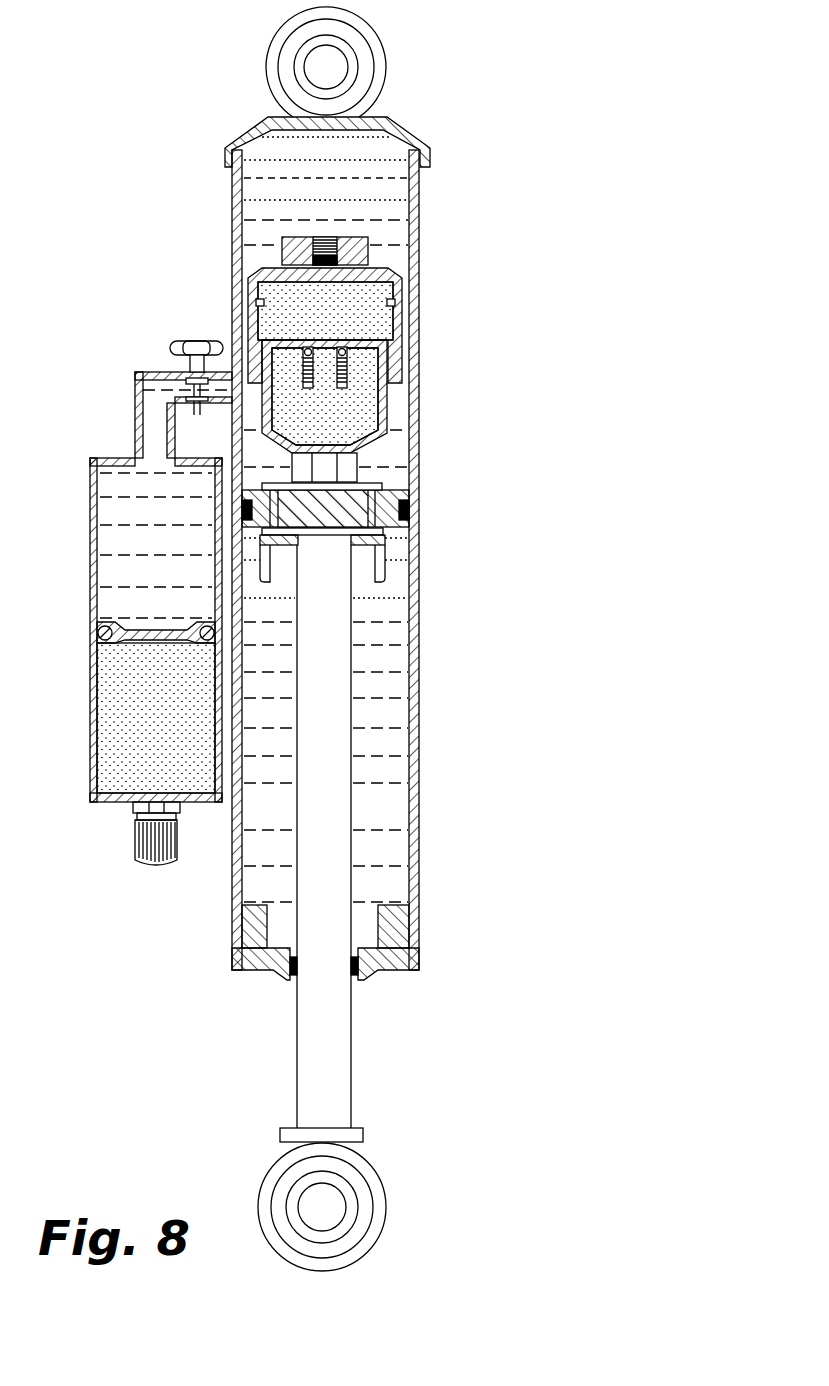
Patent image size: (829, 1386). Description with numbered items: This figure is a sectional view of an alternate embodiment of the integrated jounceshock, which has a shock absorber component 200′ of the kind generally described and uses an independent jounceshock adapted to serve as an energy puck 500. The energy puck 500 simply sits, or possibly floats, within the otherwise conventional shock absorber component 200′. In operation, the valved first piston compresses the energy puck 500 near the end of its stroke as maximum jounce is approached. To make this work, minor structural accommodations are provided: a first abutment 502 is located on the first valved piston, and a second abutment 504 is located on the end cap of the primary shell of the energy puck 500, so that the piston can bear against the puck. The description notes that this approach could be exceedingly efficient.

The shock absorber component 200′ is at (434, 735).
The energy puck 500 is at (396, 415).
The first abutment 502 is at (369, 453).
The second abutment 504 is at (368, 265).